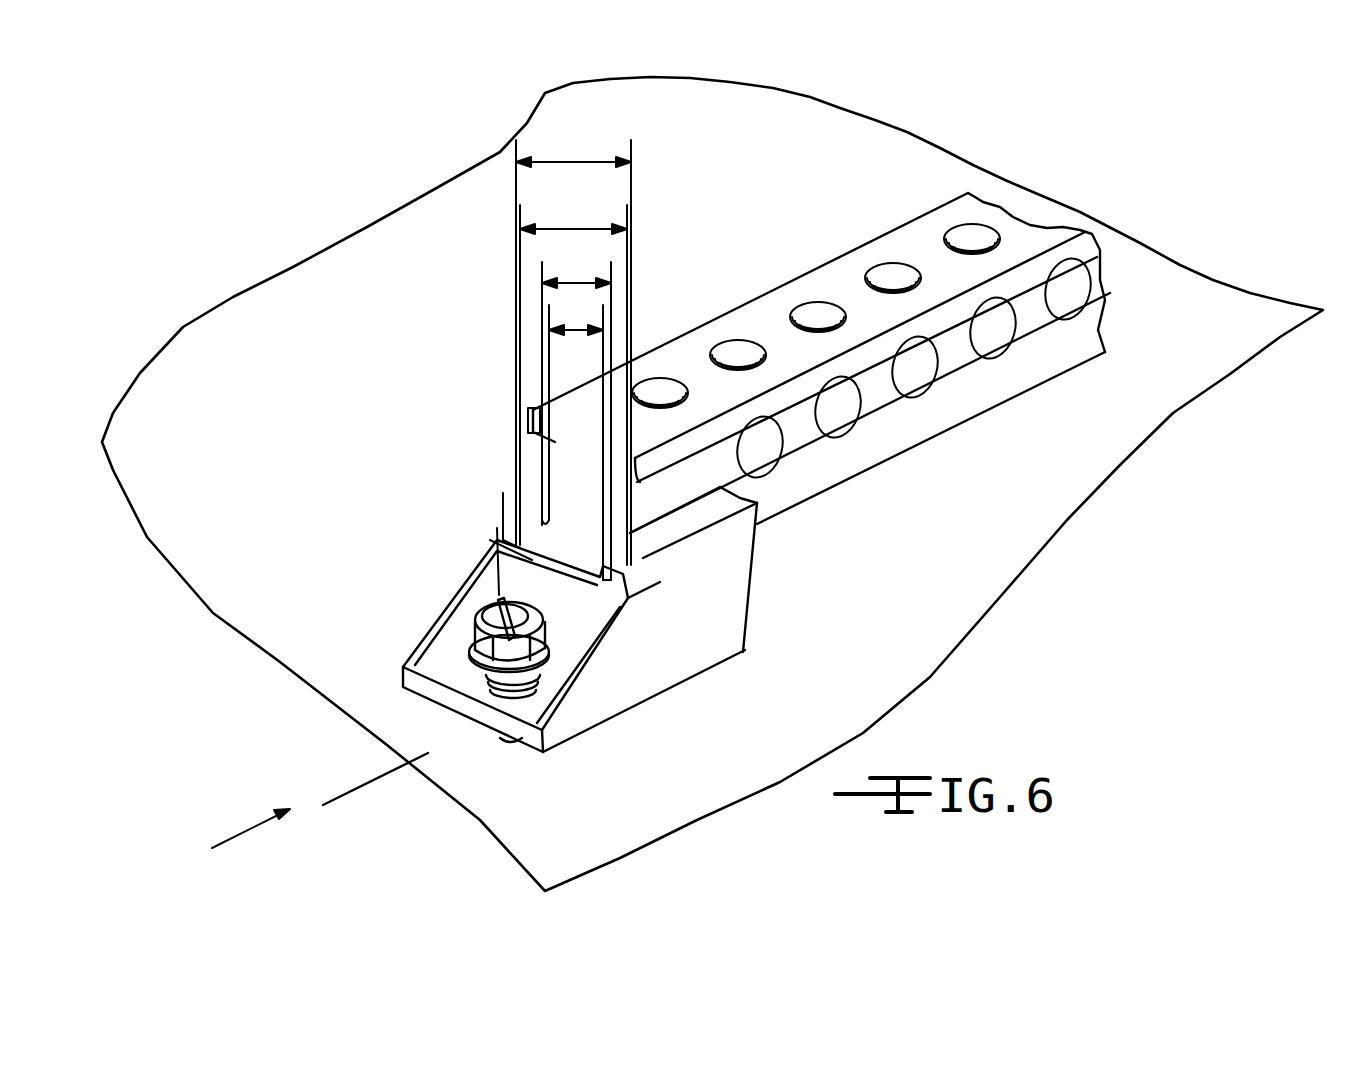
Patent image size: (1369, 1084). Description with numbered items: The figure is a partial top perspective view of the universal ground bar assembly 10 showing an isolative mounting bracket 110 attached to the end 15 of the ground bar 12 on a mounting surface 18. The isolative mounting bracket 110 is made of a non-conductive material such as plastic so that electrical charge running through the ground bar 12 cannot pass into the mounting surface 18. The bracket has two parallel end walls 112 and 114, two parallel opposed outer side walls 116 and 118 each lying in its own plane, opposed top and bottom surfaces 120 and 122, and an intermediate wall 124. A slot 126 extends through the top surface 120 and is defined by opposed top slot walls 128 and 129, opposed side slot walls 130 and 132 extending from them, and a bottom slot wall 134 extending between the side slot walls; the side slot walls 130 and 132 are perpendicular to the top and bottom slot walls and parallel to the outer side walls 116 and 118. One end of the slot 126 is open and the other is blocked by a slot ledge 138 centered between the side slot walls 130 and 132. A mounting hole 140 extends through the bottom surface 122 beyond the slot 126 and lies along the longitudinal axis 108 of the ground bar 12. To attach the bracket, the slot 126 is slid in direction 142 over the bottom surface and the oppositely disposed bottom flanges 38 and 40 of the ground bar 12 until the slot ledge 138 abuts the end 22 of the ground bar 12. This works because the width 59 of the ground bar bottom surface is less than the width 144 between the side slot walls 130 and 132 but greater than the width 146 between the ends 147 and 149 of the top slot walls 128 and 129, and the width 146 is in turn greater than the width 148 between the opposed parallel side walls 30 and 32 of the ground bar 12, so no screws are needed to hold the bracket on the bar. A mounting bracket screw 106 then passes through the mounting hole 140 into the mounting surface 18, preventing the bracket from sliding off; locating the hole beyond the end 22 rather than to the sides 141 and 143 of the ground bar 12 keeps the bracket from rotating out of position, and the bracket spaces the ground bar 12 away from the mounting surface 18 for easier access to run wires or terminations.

The universal ground bar assembly 10 is at (399, 490).
The ground bar 12 is at (841, 360).
The end 15 is at (545, 508).
The mounting surface 18 is at (300, 290).
The end 22 is at (573, 551).
The parallel side wall 30 is at (550, 460).
The parallel side wall 32 is at (606, 500).
The bottom flange 38 is at (545, 505).
The bottom flange 40 is at (627, 537).
The width 59 is at (548, 230).
The mounting bracket screw 106 is at (488, 638).
The longitudinal axis 108 is at (363, 783).
The isolative mounting bracket 110 is at (637, 673).
The end wall 112 is at (752, 598).
The end wall 114 is at (487, 715).
The outer side wall 116 is at (690, 648).
The outer side wall 118 is at (465, 605).
The top surface 120 is at (717, 503).
The bottom surface 122 is at (575, 737).
The intermediate wall 124 is at (478, 582).
The slot 126 is at (625, 612).
The top slot wall 128 is at (503, 510).
The top slot wall 129 is at (643, 558).
The side slot wall 130 is at (498, 520).
The side slot wall 132 is at (630, 587).
The bottom slot wall 134 is at (603, 606).
The slot ledge 138 is at (553, 560).
The mounting hole 140 is at (430, 682).
The side 141 is at (1020, 450).
The direction 142 is at (250, 830).
The side 143 is at (793, 255).
The width 144 is at (543, 164).
The width 146 is at (558, 283).
The end 147 is at (530, 500).
The width 148 is at (560, 330).
The end 149 is at (490, 597).